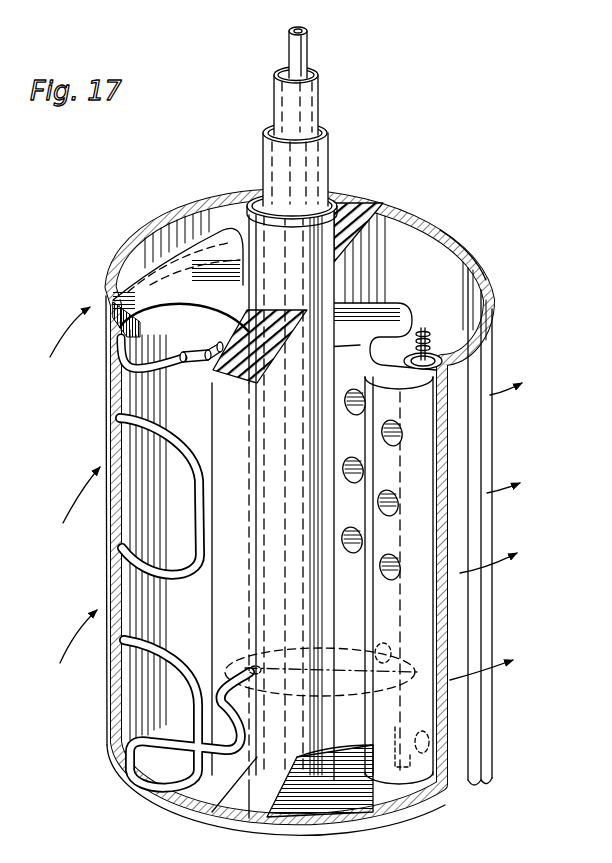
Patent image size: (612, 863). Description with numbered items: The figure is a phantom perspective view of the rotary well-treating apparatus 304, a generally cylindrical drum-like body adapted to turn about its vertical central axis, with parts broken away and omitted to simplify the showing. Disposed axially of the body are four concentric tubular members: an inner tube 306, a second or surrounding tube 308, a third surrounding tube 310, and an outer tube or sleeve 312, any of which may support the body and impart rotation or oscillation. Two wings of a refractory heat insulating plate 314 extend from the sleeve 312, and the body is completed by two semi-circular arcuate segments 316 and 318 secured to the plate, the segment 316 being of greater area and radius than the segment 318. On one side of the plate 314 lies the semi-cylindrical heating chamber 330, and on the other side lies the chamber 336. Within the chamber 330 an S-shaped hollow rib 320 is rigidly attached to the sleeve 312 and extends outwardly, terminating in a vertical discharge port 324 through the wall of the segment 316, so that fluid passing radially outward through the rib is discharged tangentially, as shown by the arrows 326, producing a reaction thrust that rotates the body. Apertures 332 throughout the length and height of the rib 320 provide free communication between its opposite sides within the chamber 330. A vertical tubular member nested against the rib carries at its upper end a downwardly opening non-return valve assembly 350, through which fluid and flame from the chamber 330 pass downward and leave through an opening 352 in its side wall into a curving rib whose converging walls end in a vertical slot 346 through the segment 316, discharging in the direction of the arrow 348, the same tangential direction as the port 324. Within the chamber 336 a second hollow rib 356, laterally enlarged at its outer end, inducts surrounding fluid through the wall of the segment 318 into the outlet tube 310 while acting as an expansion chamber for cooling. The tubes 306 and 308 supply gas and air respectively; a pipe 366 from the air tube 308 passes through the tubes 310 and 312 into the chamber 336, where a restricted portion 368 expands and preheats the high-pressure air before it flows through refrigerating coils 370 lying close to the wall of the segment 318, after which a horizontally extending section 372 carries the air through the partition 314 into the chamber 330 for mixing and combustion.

The apparatus 304 is at (319, 505).
The inner tube 306 is at (302, 57).
The second or surrounding tube 308 is at (308, 119).
The third surrounding tube 310 is at (333, 177).
The outer tube or sleeve 312 is at (258, 230).
The heat insulating plate 314 is at (353, 218).
The arcuate segment 316 is at (472, 250).
The arcuate segment 318 is at (113, 268).
The S-shaped hollow rib 320 is at (423, 288).
The discharge port 324 is at (445, 785).
The arrows 326 is at (450, 403).
The semi-cylindrical chamber 330 is at (458, 290).
The apertures 332 is at (357, 461).
The chamber 336 is at (172, 230).
The vertical slot 346 is at (477, 449).
The arrow 348 is at (477, 495).
The non-return valve assembly 350 is at (424, 336).
The opening 352 is at (415, 737).
The second hollow rib 356 is at (181, 282).
The pipe 366 is at (220, 347).
The restricted portion 368 is at (193, 360).
The refrigerating coils 370 is at (163, 445).
The horizontally extending section 372 is at (230, 690).